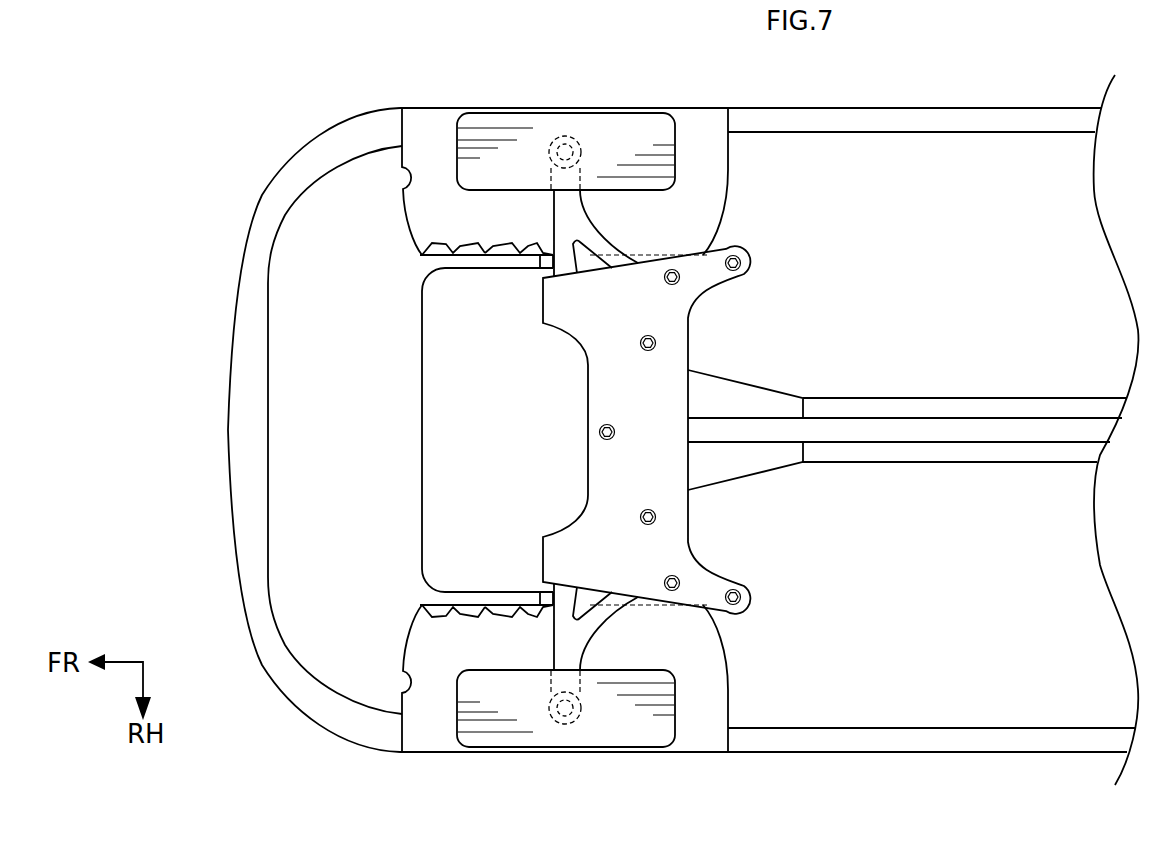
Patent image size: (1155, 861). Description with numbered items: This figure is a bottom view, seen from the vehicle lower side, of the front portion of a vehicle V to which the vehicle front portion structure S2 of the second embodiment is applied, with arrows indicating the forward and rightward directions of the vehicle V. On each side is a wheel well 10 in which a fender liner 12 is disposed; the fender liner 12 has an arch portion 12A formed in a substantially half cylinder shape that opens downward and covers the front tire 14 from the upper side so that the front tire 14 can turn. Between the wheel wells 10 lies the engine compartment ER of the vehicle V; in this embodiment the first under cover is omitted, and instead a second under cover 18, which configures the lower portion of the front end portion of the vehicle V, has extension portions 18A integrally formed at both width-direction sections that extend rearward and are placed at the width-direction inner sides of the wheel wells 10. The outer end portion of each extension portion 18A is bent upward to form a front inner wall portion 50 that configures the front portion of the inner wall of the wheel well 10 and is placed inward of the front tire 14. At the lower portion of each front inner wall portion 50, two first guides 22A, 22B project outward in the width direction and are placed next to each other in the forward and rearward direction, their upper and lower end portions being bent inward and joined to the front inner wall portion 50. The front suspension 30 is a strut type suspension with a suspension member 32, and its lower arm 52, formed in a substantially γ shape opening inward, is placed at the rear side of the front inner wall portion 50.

The wheel well 10 is at (704, 100).
The fender liner 12 is at (345, 432).
The arch portion 12A is at (410, 168).
The front tire 14 is at (584, 112).
The second under cover 18 is at (306, 634).
The extension portion 18A is at (470, 270).
The first guide 22A is at (420, 244).
The first guide 22B is at (506, 243).
The front suspension 30 is at (692, 342).
The suspension member 32 is at (690, 360).
The front inner wall portion 50 is at (533, 268).
The lower arm 52 is at (608, 237).
The vehicle front portion structure S2 is at (442, 214).
The engine compartment ER is at (517, 434).
The vehicle V is at (237, 119).